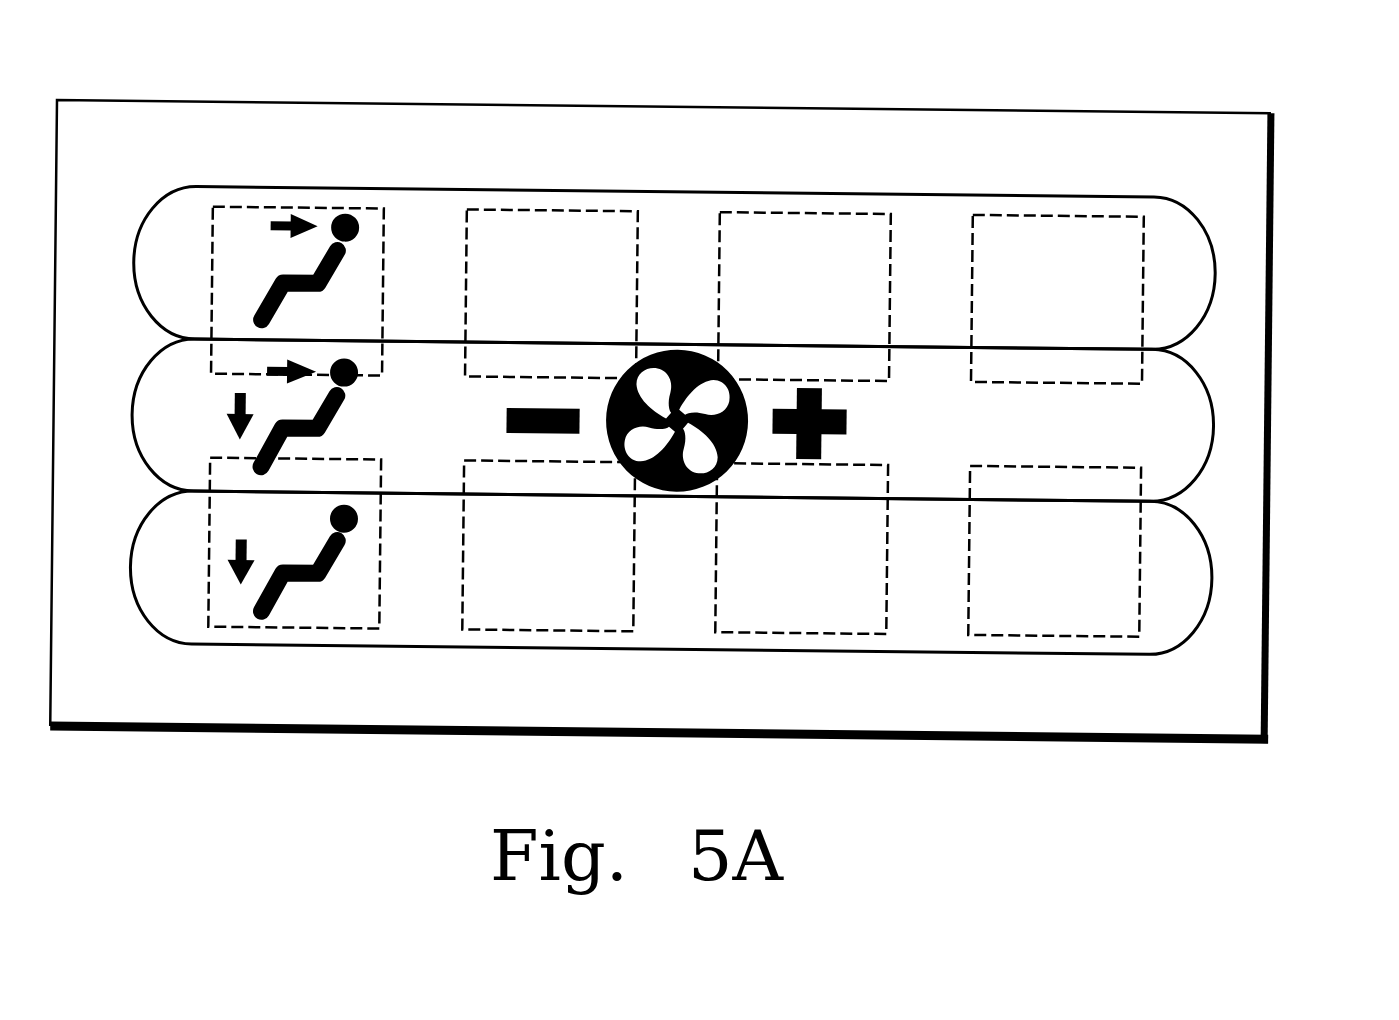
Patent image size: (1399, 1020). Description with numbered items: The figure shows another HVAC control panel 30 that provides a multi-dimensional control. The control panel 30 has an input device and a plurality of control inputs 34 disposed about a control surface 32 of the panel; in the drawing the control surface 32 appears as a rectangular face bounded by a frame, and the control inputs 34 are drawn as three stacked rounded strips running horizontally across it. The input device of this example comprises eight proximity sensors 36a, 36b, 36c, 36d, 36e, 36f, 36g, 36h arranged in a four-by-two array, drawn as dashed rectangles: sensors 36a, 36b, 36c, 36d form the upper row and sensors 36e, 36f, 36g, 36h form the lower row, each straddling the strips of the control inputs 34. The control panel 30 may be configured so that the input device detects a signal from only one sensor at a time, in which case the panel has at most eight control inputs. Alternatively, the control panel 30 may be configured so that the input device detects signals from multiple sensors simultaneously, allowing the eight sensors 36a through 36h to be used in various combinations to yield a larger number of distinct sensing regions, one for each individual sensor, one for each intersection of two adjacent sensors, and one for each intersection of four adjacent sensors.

The HVAC control panel 30 is at (1283, 95).
The control surface 32 is at (1220, 178).
The control inputs 34 is at (1193, 265).
The proximity sensor 36a is at (300, 204).
The proximity sensor 36b is at (555, 205).
The proximity sensor 36c is at (807, 205).
The proximity sensor 36d is at (1058, 207).
The proximity sensor 36e is at (298, 625).
The proximity sensor 36f is at (552, 626).
The proximity sensor 36g is at (803, 626).
The proximity sensor 36h is at (1059, 626).